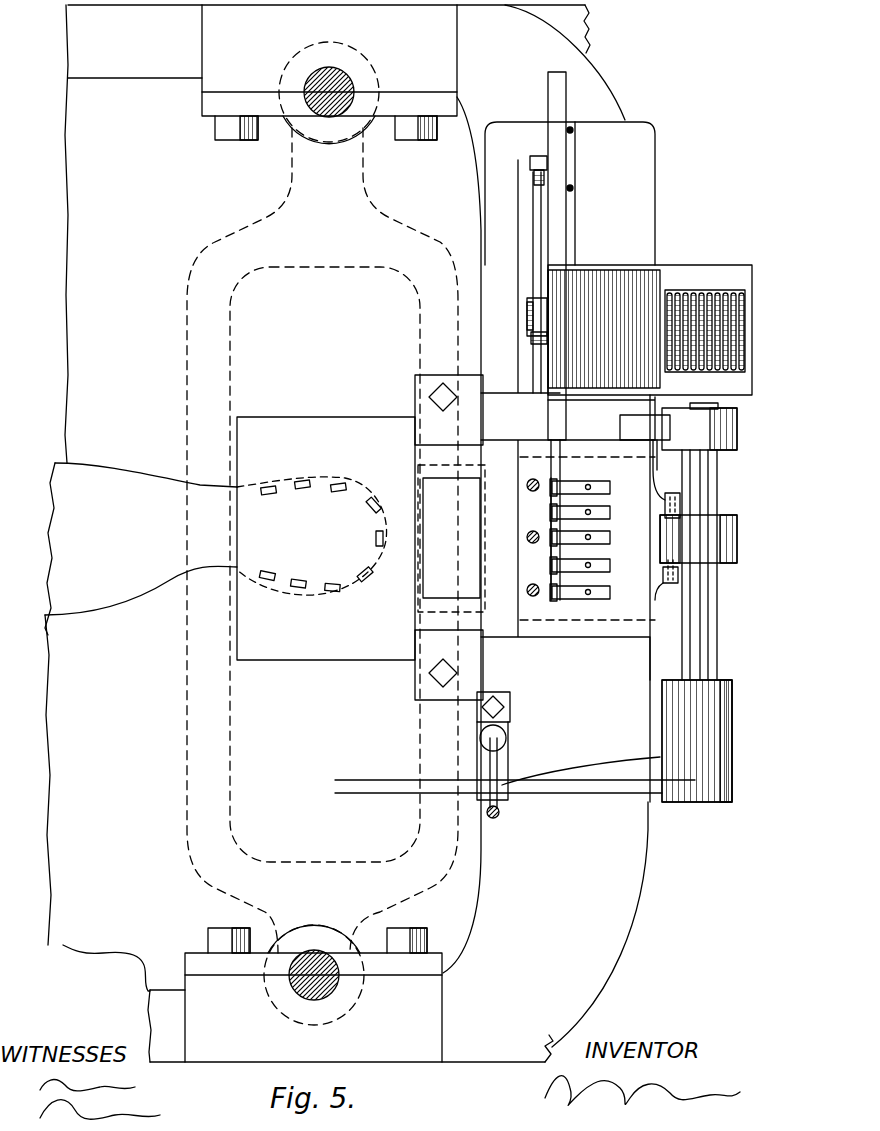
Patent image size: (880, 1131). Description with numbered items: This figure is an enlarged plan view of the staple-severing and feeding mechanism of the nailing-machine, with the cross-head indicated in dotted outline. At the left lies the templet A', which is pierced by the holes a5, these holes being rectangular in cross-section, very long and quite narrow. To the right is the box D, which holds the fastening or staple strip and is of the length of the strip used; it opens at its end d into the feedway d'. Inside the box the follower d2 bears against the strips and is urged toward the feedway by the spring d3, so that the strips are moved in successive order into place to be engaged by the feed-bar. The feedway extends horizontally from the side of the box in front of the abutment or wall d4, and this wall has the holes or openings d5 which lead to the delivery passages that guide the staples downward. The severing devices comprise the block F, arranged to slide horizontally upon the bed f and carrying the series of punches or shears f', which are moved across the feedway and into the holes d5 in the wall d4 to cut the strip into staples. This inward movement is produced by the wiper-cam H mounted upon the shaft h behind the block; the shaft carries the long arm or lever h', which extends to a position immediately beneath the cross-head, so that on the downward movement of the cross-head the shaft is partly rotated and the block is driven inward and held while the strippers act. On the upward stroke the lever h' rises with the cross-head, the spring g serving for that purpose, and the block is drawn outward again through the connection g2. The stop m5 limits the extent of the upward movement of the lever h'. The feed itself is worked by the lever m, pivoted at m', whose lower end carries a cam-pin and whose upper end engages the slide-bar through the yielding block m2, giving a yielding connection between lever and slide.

The templet A' is at (326, 538).
The holes a5 is at (328, 600).
The lever m is at (519, 282).
The yielding block m2 is at (532, 163).
The pivot m' is at (518, 321).
The stop m5 is at (515, 785).
The end of box d is at (530, 336).
The feedway d' is at (576, 334).
The follower d2 is at (660, 283).
The spring d3 is at (686, 318).
The abutment or wall d4 is at (550, 556).
The holes or openings d5 is at (738, 318).
The box D is at (705, 324).
The bed f is at (587, 561).
The punches or shears f' is at (591, 539).
The block F is at (639, 543).
The spring g is at (499, 814).
The connection g2 is at (682, 512).
The wiper-cam H is at (722, 532).
The shaft h is at (715, 565).
The long arm or lever h' is at (515, 807).